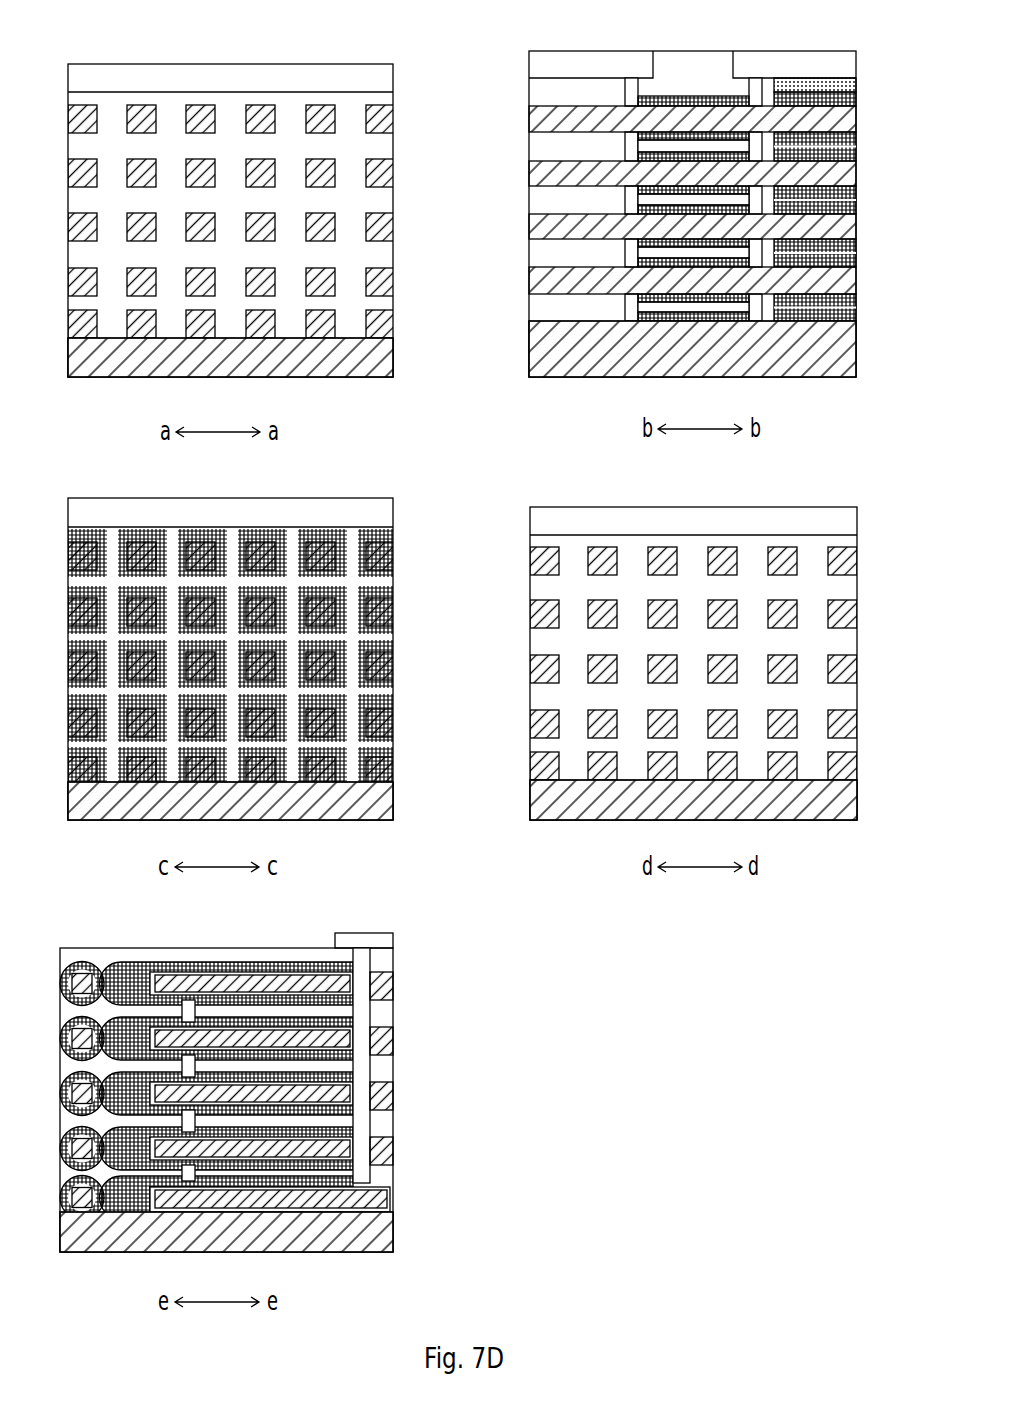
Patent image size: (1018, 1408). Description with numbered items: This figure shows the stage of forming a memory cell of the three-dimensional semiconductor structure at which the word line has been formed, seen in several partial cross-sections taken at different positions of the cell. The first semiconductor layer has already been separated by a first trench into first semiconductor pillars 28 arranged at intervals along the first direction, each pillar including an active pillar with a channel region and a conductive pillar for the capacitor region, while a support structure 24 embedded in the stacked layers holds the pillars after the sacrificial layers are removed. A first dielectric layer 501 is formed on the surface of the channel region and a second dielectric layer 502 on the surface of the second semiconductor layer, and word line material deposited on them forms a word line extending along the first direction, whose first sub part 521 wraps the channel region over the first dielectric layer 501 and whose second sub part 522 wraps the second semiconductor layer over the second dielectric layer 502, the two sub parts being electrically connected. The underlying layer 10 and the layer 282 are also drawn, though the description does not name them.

The substrate 10 is at (340, 370).
The support structure 24 is at (395, 79).
The first semiconductor pillar 28 is at (231, 221).
The insulating layer 282 is at (834, 118).
The first dielectric layer 501 is at (699, 99).
The second dielectric layer 502 is at (200, 975).
The first sub part 521 is at (661, 99).
The second sub part 522 is at (162, 963).